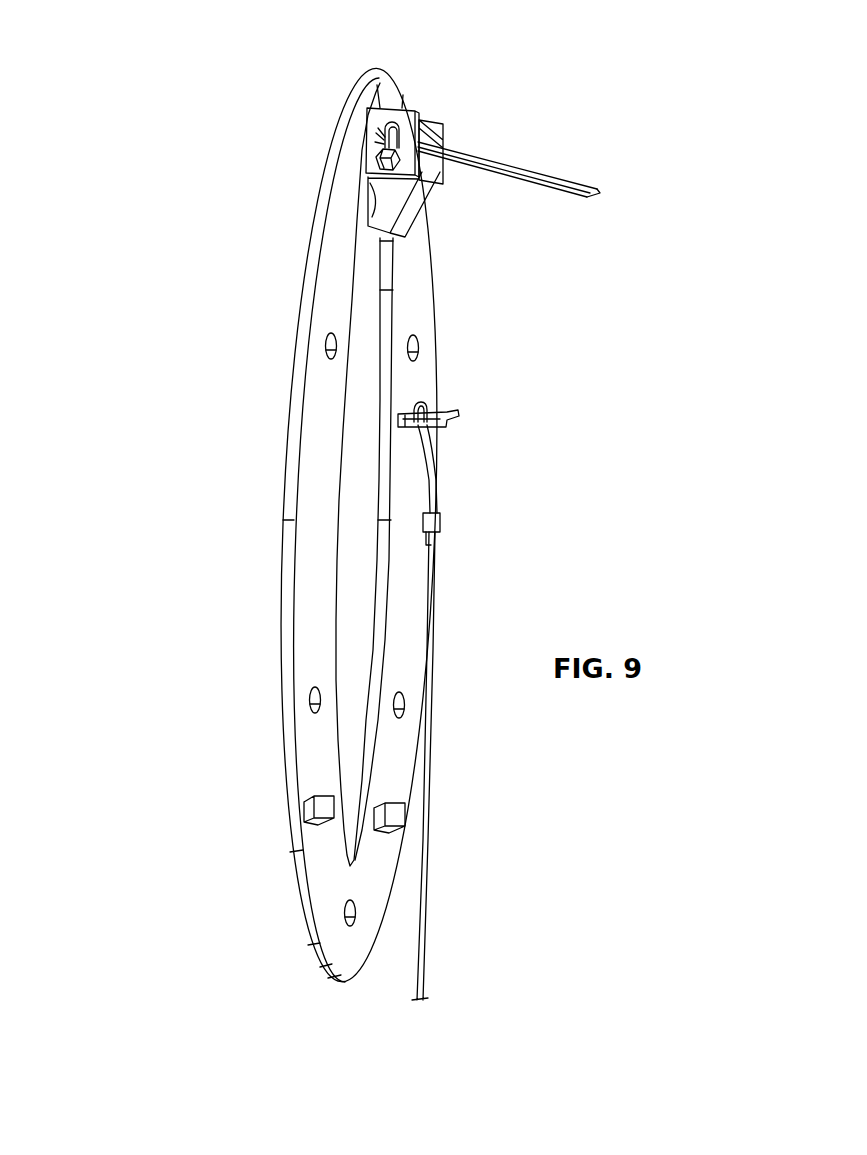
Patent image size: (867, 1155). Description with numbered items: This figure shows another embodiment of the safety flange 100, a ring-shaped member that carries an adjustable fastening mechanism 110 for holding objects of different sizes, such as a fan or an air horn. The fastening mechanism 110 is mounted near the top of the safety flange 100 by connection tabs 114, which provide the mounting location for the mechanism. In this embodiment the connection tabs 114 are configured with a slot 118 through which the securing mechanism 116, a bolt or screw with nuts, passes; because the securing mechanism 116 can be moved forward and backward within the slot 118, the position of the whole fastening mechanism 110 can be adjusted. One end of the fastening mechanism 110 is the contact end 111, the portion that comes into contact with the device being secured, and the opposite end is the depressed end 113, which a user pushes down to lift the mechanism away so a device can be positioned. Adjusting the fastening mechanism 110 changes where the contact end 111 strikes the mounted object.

The safety flange 100 is at (269, 571).
The fastening mechanism 110 is at (512, 162).
The contact end 111 is at (421, 225).
The depressed end 113 is at (598, 177).
The connection tabs 114 is at (357, 122).
The securing mechanism 116 is at (378, 155).
The slot 118 is at (382, 128).